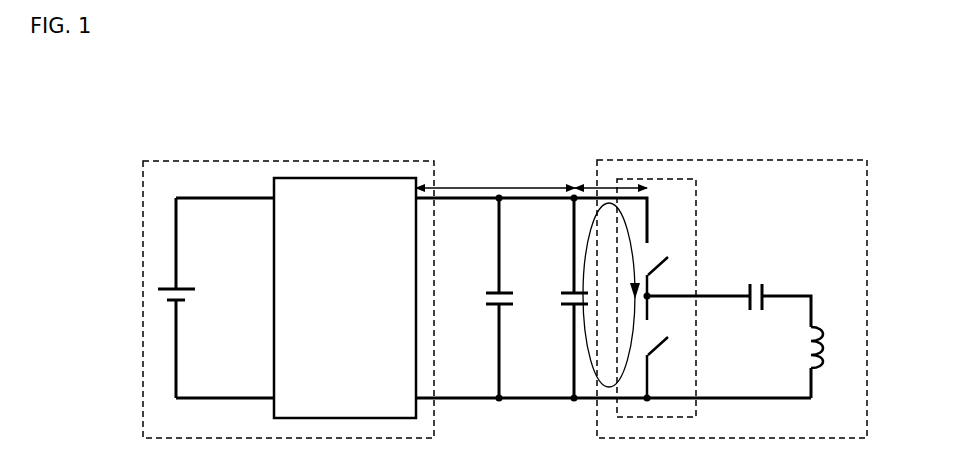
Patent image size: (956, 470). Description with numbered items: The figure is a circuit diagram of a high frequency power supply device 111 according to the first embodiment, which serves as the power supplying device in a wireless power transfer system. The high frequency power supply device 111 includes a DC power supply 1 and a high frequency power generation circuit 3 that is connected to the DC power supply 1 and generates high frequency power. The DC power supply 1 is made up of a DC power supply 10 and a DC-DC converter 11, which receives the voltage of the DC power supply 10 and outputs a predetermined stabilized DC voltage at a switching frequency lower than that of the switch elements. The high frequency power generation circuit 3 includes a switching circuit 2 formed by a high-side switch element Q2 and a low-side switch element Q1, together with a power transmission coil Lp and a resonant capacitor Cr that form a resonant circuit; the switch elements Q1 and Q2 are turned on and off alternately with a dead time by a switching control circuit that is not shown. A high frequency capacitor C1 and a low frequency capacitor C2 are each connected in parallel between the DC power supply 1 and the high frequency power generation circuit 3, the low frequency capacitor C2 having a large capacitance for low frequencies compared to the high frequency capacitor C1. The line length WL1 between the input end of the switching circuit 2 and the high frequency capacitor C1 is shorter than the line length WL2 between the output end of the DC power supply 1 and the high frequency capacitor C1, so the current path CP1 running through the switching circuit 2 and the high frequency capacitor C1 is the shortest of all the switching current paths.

The high frequency power supply device 111 is at (228, 67).
The DC power supply 1 is at (269, 160).
The DC power supply 10 is at (157, 297).
The DC-DC converter 11 is at (345, 178).
The switching circuit 2 is at (686, 172).
The high frequency power generation circuit 3 is at (785, 159).
The line length WL1 is at (610, 187).
The line length WL2 is at (495, 171).
The high frequency capacitor C1 is at (556, 298).
The low frequency capacitor C2 is at (480, 298).
The current path CP1 is at (585, 340).
The low-side switch element Q1 is at (674, 360).
The high-side switch element Q2 is at (674, 278).
The resonant capacitor Cr is at (755, 281).
The power transmission coil Lp is at (832, 347).